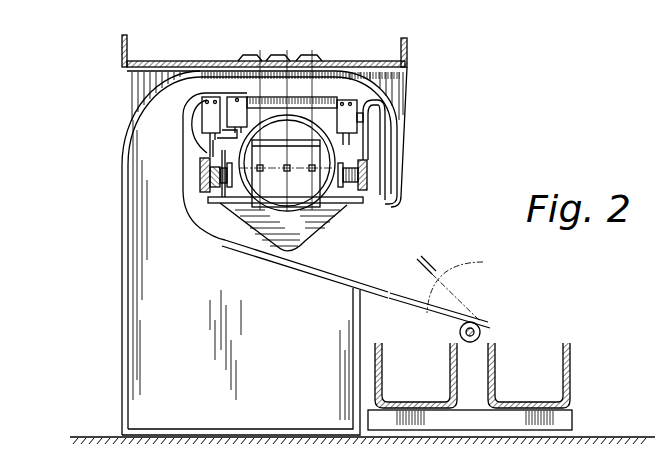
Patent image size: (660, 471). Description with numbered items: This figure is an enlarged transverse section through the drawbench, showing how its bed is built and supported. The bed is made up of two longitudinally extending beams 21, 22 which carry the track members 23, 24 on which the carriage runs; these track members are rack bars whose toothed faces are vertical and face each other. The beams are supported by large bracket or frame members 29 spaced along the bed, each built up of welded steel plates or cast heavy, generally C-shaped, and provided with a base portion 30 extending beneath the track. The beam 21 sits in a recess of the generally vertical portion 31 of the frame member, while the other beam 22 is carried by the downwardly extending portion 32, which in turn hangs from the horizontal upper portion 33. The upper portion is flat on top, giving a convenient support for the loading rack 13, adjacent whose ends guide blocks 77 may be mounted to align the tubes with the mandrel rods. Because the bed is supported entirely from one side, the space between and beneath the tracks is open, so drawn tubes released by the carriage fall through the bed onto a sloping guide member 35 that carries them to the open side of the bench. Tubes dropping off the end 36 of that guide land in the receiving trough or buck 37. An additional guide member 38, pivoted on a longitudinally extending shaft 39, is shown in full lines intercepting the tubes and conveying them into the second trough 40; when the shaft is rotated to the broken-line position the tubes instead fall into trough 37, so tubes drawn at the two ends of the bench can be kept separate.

The loading rack 13 is at (360, 63).
The longitudinally extending beam 21 is at (200, 163).
The longitudinally extending beam 22 is at (380, 170).
The track member 23 is at (200, 188).
The track member 24 is at (383, 170).
The bracket or frame member 29 is at (137, 167).
The base portion 30 is at (306, 403).
The generally vertical portion 31 is at (197, 182).
The downwardly extending portion 32 is at (372, 153).
The horizontal upper portion 33 is at (327, 82).
The sloping guide member 35 is at (348, 275).
The end of guide member 36 is at (388, 291).
The receiving trough or buck 37 is at (385, 379).
The additional guide member 38 is at (461, 287).
The longitudinally extending shaft 39 is at (460, 331).
The receiving trough or buck 40 is at (500, 379).
The guide block 77 is at (237, 58).